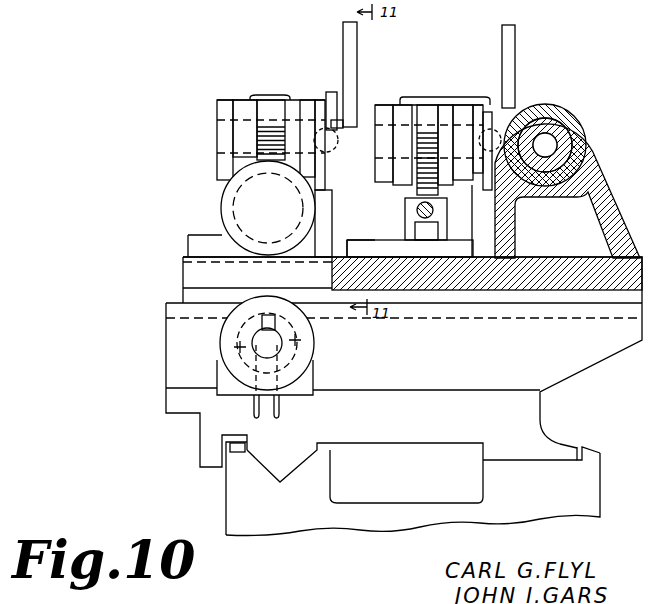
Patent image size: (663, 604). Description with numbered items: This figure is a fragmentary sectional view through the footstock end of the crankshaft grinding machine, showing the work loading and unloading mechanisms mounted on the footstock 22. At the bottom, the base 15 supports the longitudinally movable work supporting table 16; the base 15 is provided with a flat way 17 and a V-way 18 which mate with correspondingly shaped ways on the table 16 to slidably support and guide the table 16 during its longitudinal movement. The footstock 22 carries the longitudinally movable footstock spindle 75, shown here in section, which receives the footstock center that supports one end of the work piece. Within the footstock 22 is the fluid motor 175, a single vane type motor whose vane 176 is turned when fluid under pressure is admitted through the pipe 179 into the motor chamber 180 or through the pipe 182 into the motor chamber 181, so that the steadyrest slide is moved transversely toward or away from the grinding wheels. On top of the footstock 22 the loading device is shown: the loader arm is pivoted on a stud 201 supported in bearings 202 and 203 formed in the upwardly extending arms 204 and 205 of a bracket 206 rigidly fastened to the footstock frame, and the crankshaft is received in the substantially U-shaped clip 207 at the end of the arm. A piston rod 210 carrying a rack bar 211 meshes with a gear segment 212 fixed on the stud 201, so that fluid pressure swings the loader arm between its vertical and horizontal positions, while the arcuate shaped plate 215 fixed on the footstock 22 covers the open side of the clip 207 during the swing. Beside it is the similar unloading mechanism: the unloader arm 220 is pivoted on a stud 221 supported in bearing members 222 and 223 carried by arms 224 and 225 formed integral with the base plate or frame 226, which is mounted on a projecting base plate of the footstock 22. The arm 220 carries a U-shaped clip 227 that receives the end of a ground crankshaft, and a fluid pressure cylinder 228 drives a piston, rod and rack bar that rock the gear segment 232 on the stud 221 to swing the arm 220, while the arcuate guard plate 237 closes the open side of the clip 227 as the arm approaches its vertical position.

The base 15 is at (590, 496).
The work supporting table 16 is at (535, 418).
The flat way 17 is at (585, 463).
The V-way 18 is at (262, 468).
The footstock 22 is at (568, 92).
The footstock spindle 75 is at (572, 132).
The fluid motor 175 is at (317, 355).
The vane 176 is at (272, 320).
The pipe 179 is at (280, 404).
The motor chamber 180 is at (312, 340).
The motor chamber 181 is at (240, 347).
The pipe 182 is at (255, 402).
The stud 201 is at (407, 110).
The bearing 202 is at (467, 110).
The bearing 203 is at (388, 110).
The upwardly extending arm 204 is at (458, 241).
The upwardly extending arm 205 is at (390, 241).
The bracket 206 is at (350, 244).
The U-shaped clip 207 is at (490, 120).
The piston rod 210 is at (432, 213).
The rack bar 211 is at (417, 208).
The gear segment 212 is at (427, 135).
The arcuate shaped plate 215 is at (502, 30).
The unloader arm 220 is at (282, 95).
The stud 221 is at (232, 117).
The bearing member 222 is at (307, 108).
The bearing member 223 is at (232, 110).
The arm 224 is at (320, 235).
The arm 225 is at (220, 237).
The base plate or frame 226 is at (192, 250).
The U-shaped clip 227 is at (333, 118).
The fluid pressure cylinder 228 is at (228, 205).
The gear segment 232 is at (260, 142).
The guard plate 237 is at (352, 45).